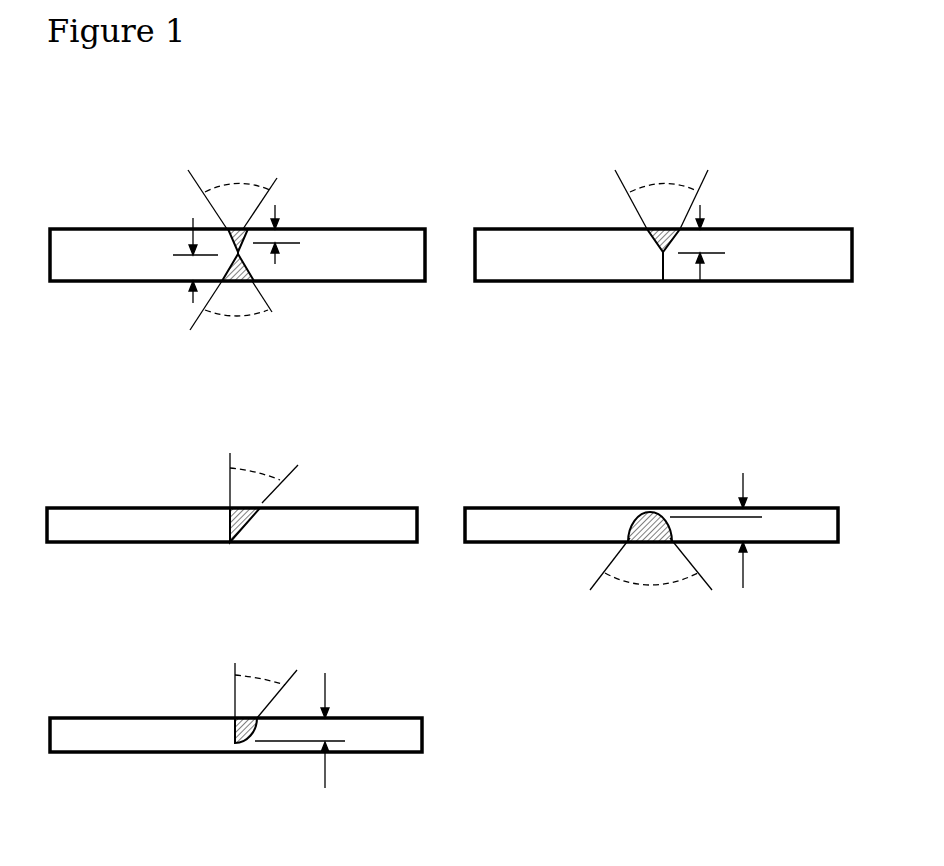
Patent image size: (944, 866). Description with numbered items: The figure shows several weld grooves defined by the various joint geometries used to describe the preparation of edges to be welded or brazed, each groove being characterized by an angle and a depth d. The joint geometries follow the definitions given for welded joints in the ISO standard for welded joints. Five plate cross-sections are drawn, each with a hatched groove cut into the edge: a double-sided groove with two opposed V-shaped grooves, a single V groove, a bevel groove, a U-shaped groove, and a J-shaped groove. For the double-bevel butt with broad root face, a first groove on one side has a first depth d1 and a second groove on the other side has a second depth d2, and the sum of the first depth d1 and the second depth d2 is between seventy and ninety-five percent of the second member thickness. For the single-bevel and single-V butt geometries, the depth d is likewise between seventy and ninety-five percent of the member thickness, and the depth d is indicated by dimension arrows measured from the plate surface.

The first depth d1 is at (300, 216).
The second depth d2 is at (170, 283).
The depth d is at (522, 478).